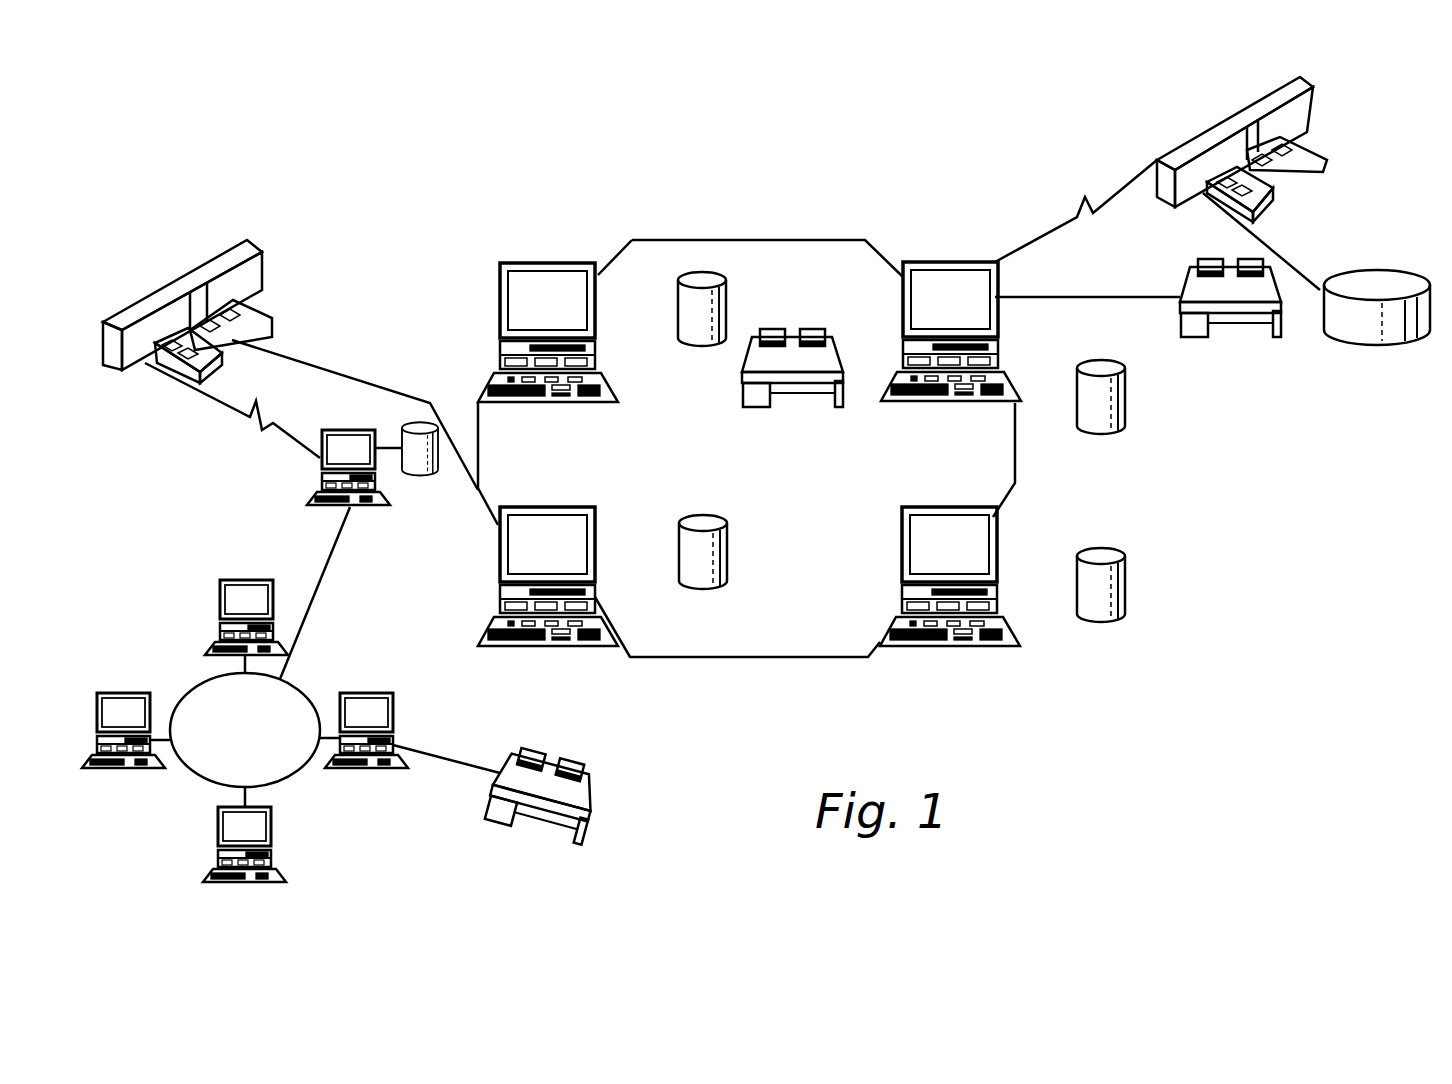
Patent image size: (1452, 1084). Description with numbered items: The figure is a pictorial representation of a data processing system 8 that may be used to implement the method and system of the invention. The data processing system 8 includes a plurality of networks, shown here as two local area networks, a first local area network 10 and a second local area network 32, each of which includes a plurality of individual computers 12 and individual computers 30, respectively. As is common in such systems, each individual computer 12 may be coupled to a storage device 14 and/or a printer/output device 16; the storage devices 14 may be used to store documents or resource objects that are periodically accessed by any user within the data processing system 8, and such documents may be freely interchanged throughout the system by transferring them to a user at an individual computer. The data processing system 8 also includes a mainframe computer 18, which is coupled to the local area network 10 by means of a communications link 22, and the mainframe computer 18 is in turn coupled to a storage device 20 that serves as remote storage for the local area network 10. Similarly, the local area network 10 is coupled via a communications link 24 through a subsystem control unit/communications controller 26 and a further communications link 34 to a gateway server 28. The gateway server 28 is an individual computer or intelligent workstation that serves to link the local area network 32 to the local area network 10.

The data processing system 8 is at (783, 190).
The local area network 10 is at (775, 657).
The individual computer 12 is at (568, 263).
The storage device 14 is at (727, 290).
The printer/output device 16 is at (791, 340).
The mainframe computer 18 is at (1235, 118).
The storage device 20 is at (1402, 276).
The communications link 22 is at (1112, 191).
The communications link 24 is at (353, 373).
The subsystem control unit/communications controller 26 is at (260, 250).
The gateway server 28 is at (348, 430).
The individual computer 30 is at (256, 580).
The local area network 32 is at (198, 777).
The communications link 34 is at (268, 437).